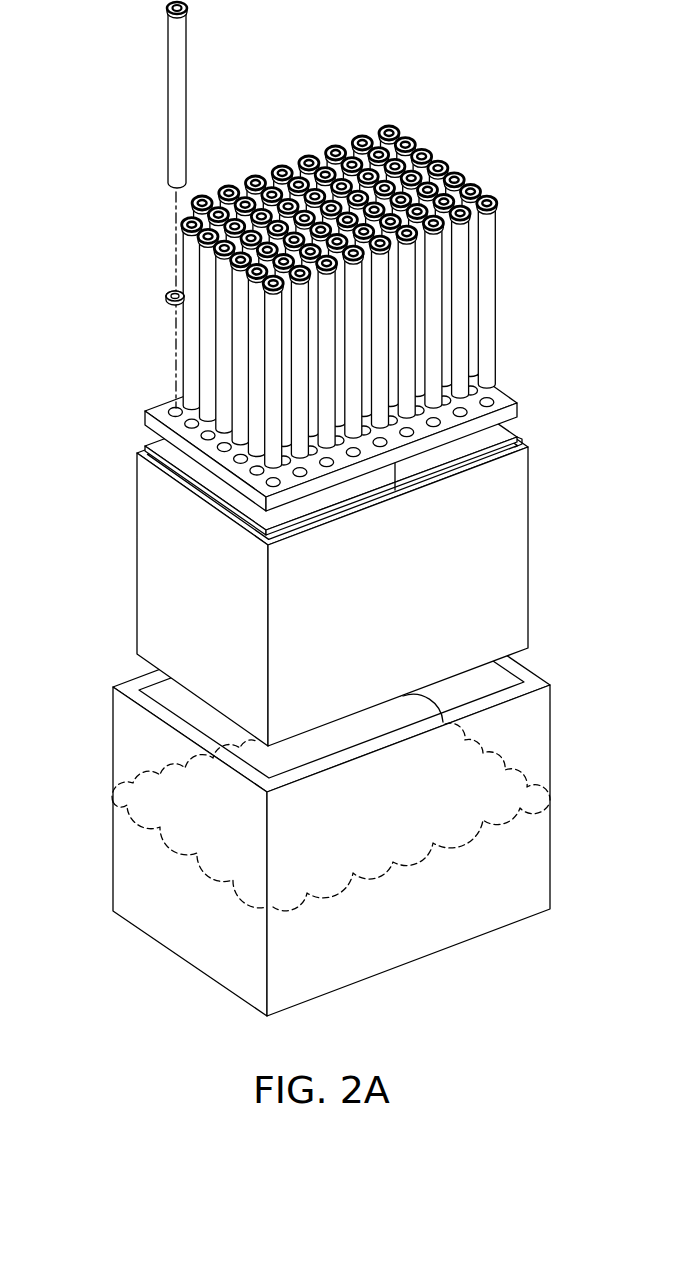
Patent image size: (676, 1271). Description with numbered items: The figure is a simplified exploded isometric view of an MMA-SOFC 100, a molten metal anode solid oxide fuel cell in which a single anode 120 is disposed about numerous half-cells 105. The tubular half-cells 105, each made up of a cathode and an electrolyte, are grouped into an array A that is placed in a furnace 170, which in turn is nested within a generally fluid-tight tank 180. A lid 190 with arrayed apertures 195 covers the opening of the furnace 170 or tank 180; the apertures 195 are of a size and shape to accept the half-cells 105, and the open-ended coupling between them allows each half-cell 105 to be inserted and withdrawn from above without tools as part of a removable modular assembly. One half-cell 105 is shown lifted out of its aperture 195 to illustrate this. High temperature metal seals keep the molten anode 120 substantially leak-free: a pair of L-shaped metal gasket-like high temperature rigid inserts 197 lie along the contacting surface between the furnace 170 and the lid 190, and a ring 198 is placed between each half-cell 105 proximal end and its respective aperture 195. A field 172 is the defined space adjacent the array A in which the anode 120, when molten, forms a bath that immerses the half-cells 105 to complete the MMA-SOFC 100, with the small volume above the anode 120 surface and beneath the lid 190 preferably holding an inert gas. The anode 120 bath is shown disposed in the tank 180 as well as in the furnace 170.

The MMA-SOFC 100 is at (324, 509).
The half-cell 105 is at (187, 65).
The ring 198 is at (165, 299).
The aperture 195 is at (172, 406).
The high temperature rigid insert 197 is at (145, 446).
The lid 190 is at (520, 403).
The field 172 is at (490, 446).
The furnace 170 is at (505, 555).
The tank 180 is at (533, 829).
The anode 120 is at (390, 866).
The array A is at (518, 138).